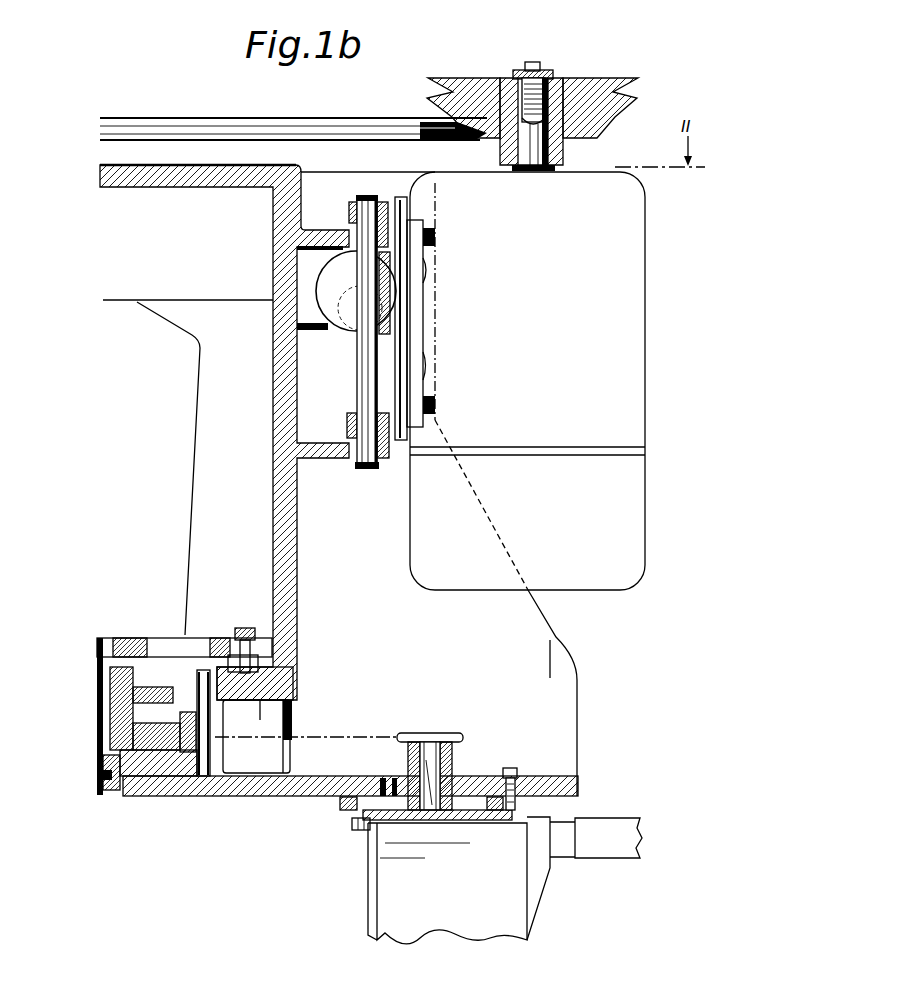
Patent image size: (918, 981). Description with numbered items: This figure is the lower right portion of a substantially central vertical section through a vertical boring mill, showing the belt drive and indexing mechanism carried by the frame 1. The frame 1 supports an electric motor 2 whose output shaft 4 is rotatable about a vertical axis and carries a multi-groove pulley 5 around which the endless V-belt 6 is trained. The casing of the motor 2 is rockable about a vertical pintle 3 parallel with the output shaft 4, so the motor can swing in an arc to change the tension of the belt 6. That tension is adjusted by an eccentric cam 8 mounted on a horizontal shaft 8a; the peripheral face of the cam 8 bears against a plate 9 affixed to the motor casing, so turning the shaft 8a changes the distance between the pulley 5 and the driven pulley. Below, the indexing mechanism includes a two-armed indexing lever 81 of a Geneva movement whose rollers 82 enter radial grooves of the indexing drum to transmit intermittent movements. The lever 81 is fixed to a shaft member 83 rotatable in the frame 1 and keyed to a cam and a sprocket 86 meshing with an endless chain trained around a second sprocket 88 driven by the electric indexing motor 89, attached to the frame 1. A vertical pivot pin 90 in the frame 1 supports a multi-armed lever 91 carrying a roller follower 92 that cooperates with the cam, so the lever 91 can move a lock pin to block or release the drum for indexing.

The frame 1 is at (292, 553).
The electric motor 2 is at (597, 181).
The vertical pintle 3 is at (366, 470).
The output shaft 4 is at (542, 73).
The multi-groove pulley 5 is at (607, 119).
The endless V-belt 6 is at (226, 129).
The eccentric cam 8 is at (352, 336).
The horizontal shaft 8a is at (388, 312).
The plate 9 is at (401, 441).
The two-armed indexing lever 81 is at (168, 638).
The rollers 82 is at (258, 667).
The shaft member 83 is at (133, 785).
The sprocket 86 is at (128, 736).
The second sprocket 88 is at (452, 765).
The electric indexing motor 89 is at (603, 830).
The vertical pivot pin 90 is at (190, 780).
The lever 91 is at (179, 735).
The roller follower 92 is at (152, 688).